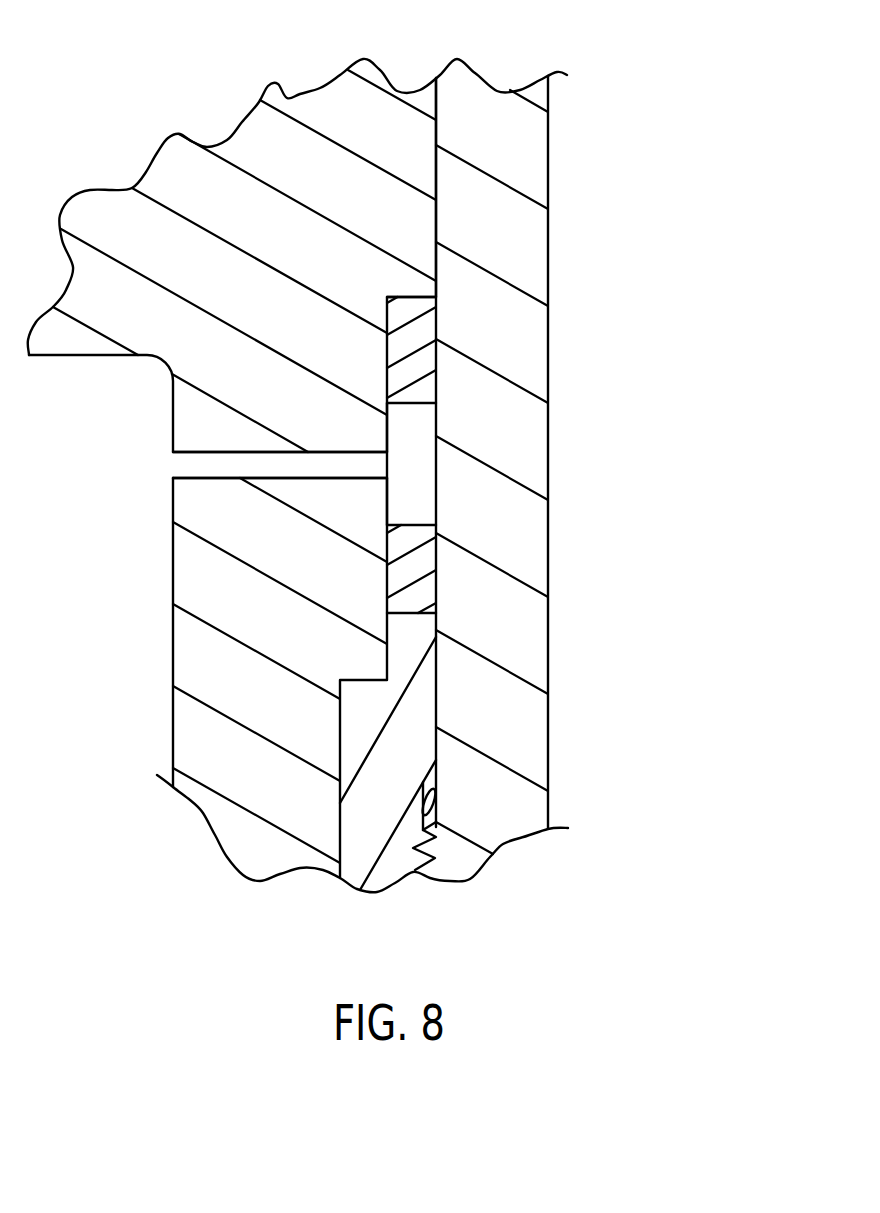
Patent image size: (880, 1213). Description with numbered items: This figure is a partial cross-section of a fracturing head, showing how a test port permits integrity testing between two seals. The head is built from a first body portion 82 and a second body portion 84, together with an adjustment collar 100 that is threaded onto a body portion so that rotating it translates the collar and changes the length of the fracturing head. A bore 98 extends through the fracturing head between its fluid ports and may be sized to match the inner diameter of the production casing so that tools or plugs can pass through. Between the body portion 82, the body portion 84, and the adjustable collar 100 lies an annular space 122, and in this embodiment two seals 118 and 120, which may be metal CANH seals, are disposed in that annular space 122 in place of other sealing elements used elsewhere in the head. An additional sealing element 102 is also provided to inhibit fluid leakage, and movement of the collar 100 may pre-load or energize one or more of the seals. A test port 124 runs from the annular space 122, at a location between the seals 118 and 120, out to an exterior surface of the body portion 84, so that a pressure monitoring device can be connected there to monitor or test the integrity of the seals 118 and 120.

The first body portion 82 is at (525, 545).
The body portion 84 is at (193, 738).
The bore 98 is at (548, 738).
The adjustment collar 100 is at (353, 870).
The sealing element 102 is at (437, 806).
The seal 118 is at (420, 337).
The seal 120 is at (418, 587).
The annular space 122 is at (410, 460).
The test port 124 is at (200, 477).